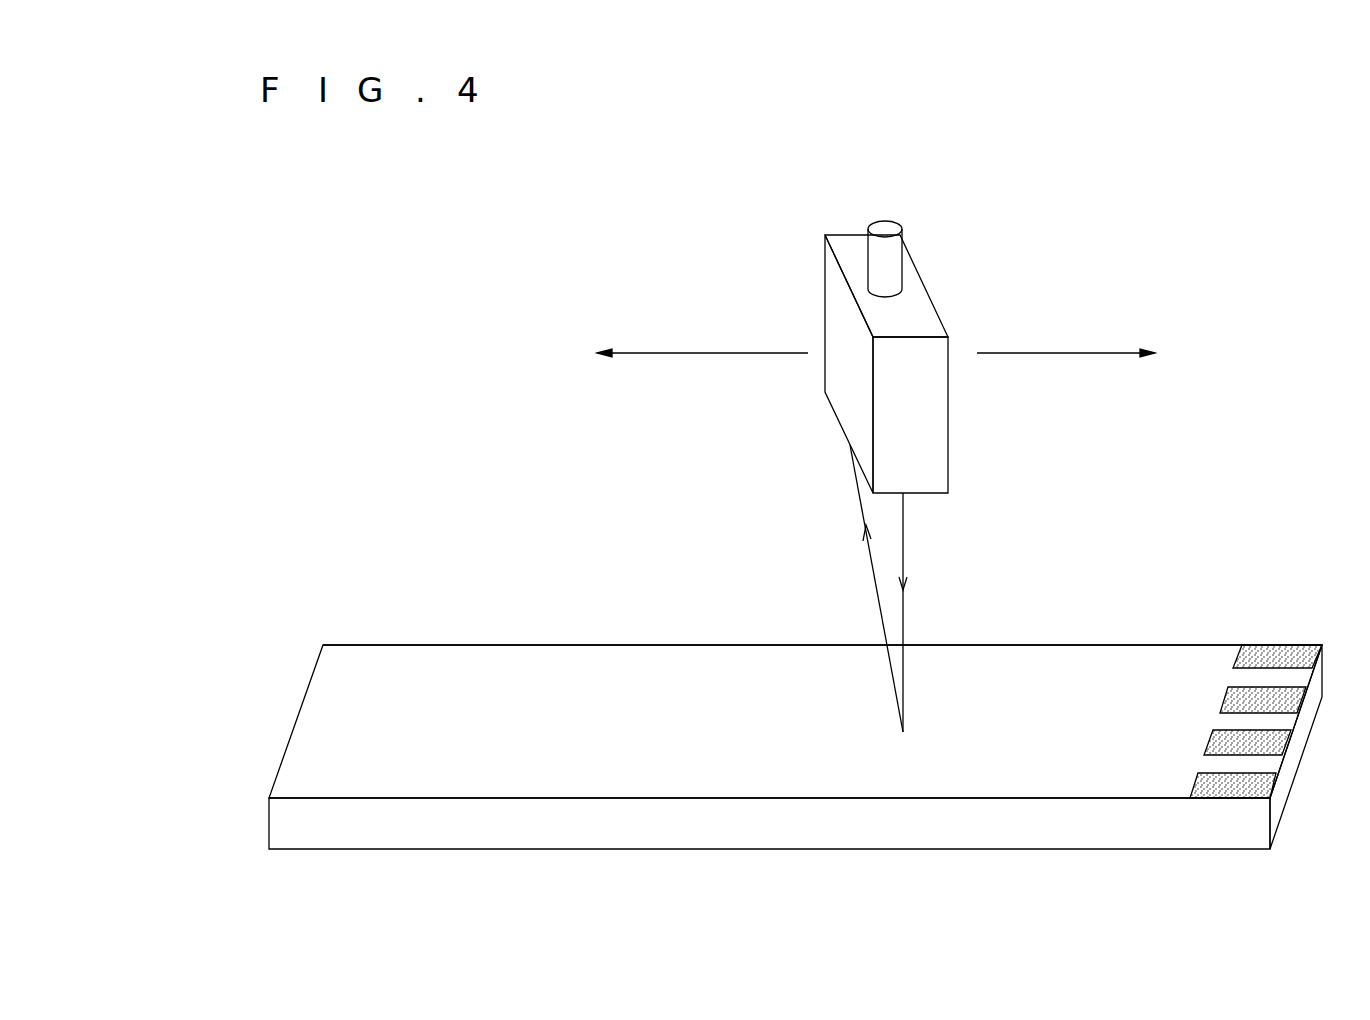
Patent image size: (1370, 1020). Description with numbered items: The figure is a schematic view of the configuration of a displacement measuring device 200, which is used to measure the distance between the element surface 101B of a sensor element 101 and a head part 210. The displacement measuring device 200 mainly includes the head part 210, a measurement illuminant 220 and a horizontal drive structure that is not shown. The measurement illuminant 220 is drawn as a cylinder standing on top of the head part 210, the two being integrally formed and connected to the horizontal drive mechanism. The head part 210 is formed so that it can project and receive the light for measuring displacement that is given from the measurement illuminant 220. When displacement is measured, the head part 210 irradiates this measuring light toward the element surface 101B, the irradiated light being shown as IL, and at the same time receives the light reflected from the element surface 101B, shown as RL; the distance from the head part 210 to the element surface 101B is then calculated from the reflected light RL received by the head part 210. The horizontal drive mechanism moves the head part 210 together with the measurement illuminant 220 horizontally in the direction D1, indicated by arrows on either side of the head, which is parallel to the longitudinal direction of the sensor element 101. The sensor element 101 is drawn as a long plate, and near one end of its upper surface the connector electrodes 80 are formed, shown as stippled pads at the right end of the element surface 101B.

The displacement measuring device 200 is at (668, 178).
The head part 210 is at (917, 303).
The measurement illuminant 220 is at (892, 262).
The direction D1 is at (876, 341).
The reflected light RL is at (850, 508).
The irradiated light IL is at (905, 553).
The sensor element 101 is at (374, 645).
The element surface 101B is at (1032, 670).
The connector electrodes 80 is at (1278, 650).